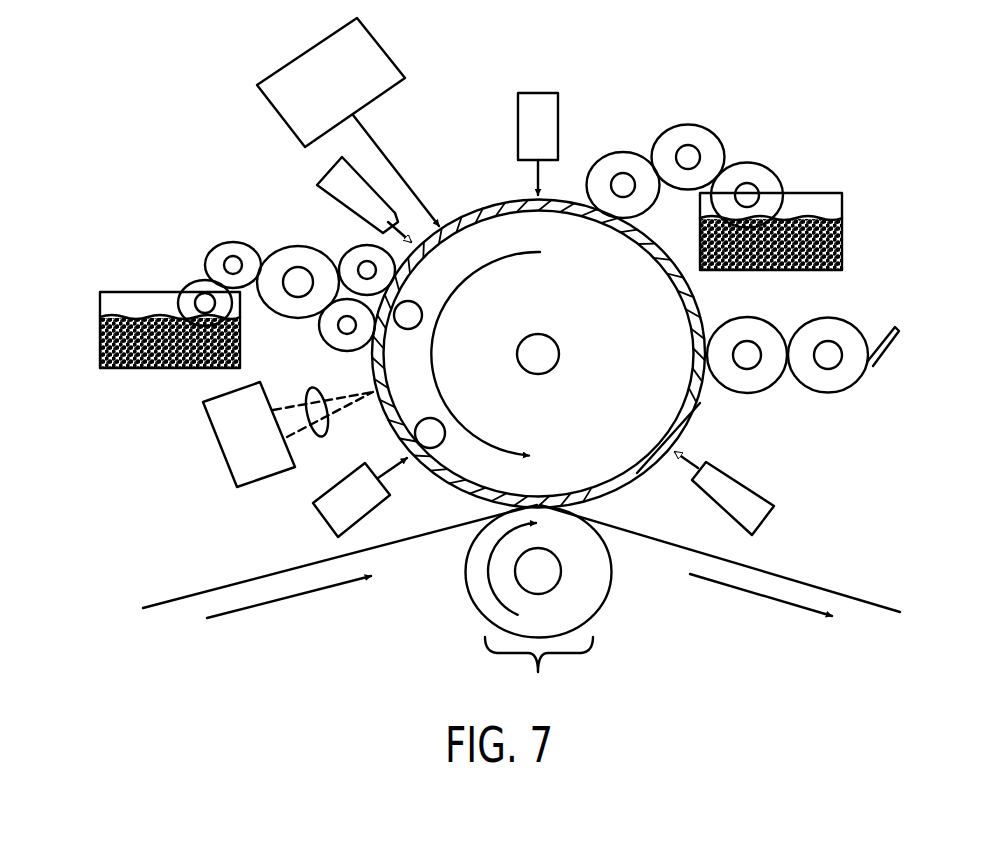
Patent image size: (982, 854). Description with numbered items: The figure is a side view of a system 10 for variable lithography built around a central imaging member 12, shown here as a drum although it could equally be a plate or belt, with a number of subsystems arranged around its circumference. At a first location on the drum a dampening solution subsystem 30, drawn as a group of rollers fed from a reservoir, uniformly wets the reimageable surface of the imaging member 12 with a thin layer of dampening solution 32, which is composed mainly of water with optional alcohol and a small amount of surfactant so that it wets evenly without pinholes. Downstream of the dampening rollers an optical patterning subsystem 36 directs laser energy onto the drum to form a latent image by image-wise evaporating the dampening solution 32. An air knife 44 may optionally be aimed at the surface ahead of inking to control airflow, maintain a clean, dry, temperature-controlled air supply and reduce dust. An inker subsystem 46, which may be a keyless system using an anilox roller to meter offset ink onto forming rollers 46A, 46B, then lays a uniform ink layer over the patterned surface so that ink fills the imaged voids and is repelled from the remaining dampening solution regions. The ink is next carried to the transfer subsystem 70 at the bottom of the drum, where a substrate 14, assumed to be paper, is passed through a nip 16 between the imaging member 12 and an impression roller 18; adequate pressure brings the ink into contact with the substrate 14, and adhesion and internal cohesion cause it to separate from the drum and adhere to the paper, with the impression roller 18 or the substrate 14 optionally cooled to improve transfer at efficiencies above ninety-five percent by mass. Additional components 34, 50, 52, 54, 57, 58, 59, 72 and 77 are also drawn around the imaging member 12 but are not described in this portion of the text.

The system for variable lithography 10 is at (136, 136).
The imaging member 12 is at (697, 408).
The substrate 14 is at (198, 596).
The nip 16 is at (540, 503).
The impression roller 18 is at (612, 569).
The dampening solution subsystem 30 is at (738, 77).
The dampening solution 32 is at (842, 242).
The charging unit 34 is at (538, 92).
The optical patterning subsystem 36 is at (380, 44).
The air knife 44 is at (325, 174).
The inker subsystem 46 is at (263, 306).
The forming roller 46A is at (383, 277).
The forming roller 46B is at (362, 327).
The sensor assembly 50 is at (262, 436).
The sensor 52 is at (253, 487).
The lens 54 is at (312, 388).
The metering roller 57 is at (430, 433).
The heater 58 is at (323, 523).
The metering roller 59 is at (408, 315).
The transfer subsystem 70 is at (539, 670).
The cleaning rollers 72 is at (897, 300).
The erase lamp / discharge unit 77 is at (763, 524).